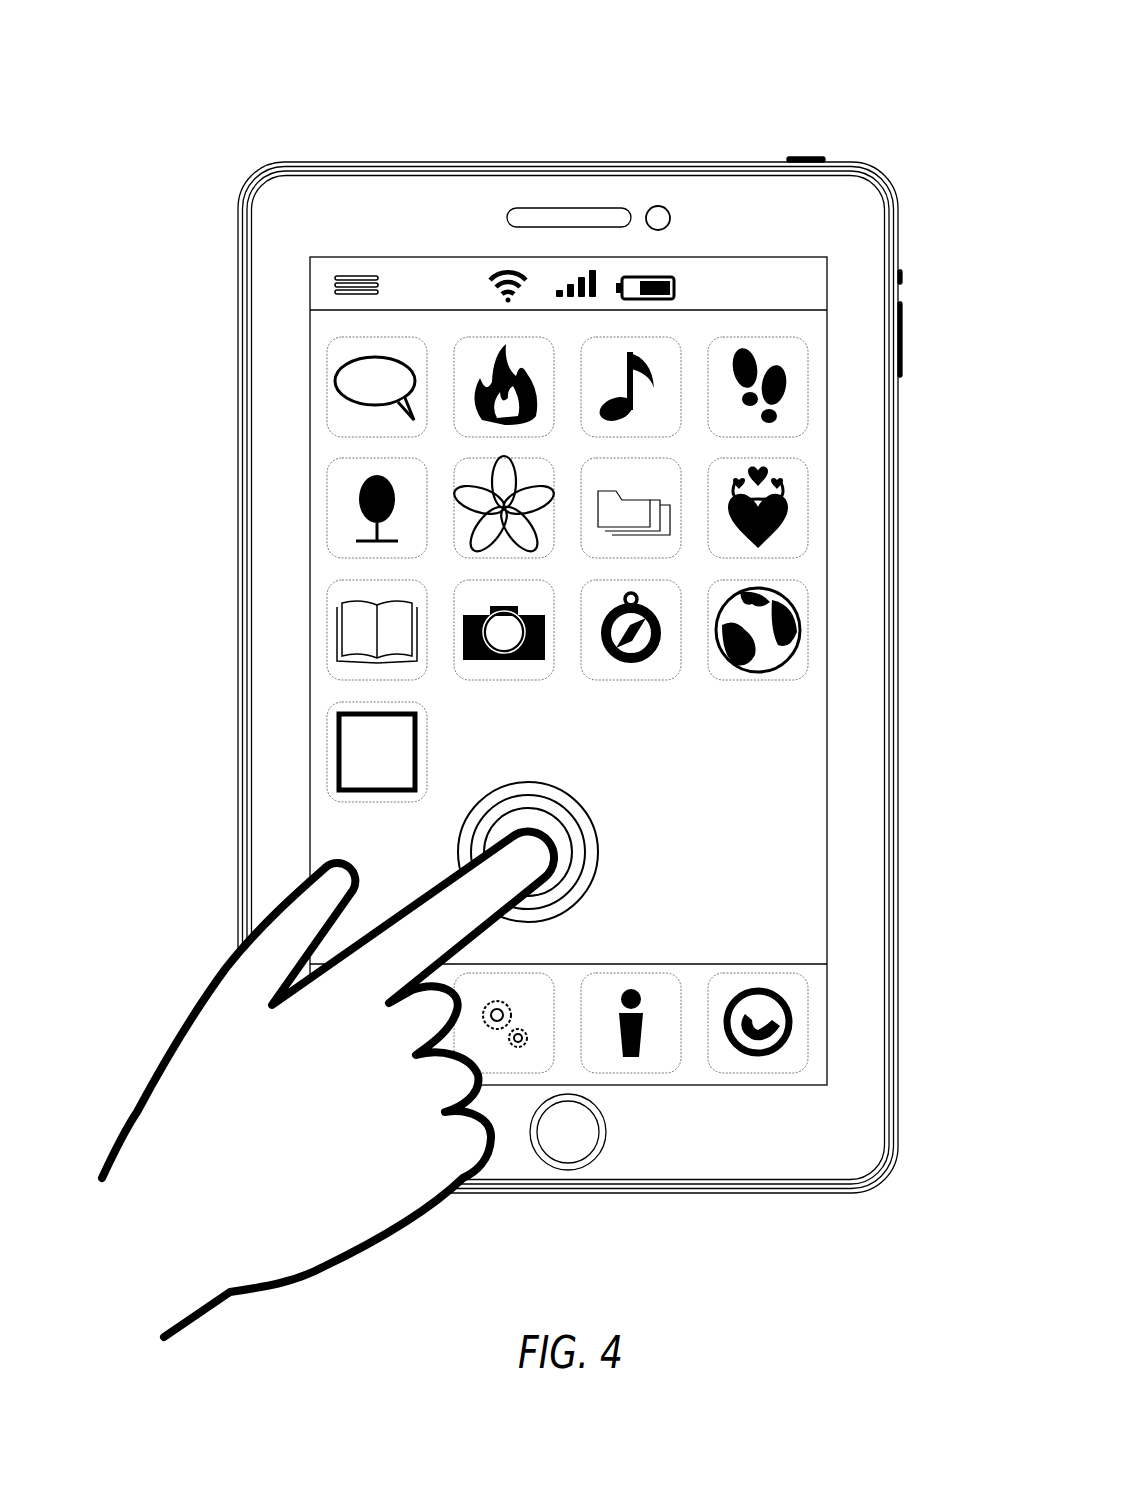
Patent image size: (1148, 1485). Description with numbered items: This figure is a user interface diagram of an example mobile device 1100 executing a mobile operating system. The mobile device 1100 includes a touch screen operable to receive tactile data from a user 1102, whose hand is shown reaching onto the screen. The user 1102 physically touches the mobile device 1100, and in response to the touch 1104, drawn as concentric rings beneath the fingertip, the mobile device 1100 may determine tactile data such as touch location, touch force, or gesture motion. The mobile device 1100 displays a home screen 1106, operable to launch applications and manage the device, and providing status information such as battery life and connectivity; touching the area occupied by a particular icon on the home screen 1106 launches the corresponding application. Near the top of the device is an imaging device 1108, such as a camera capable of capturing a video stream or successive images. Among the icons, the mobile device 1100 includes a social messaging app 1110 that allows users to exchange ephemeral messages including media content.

The mobile device 1100 is at (197, 101).
The user 1102 is at (225, 962).
The touch 1104 is at (455, 840).
The home screen 1106 is at (310, 257).
The imaging device 1108 is at (640, 200).
The social messaging app 1110 is at (327, 712).